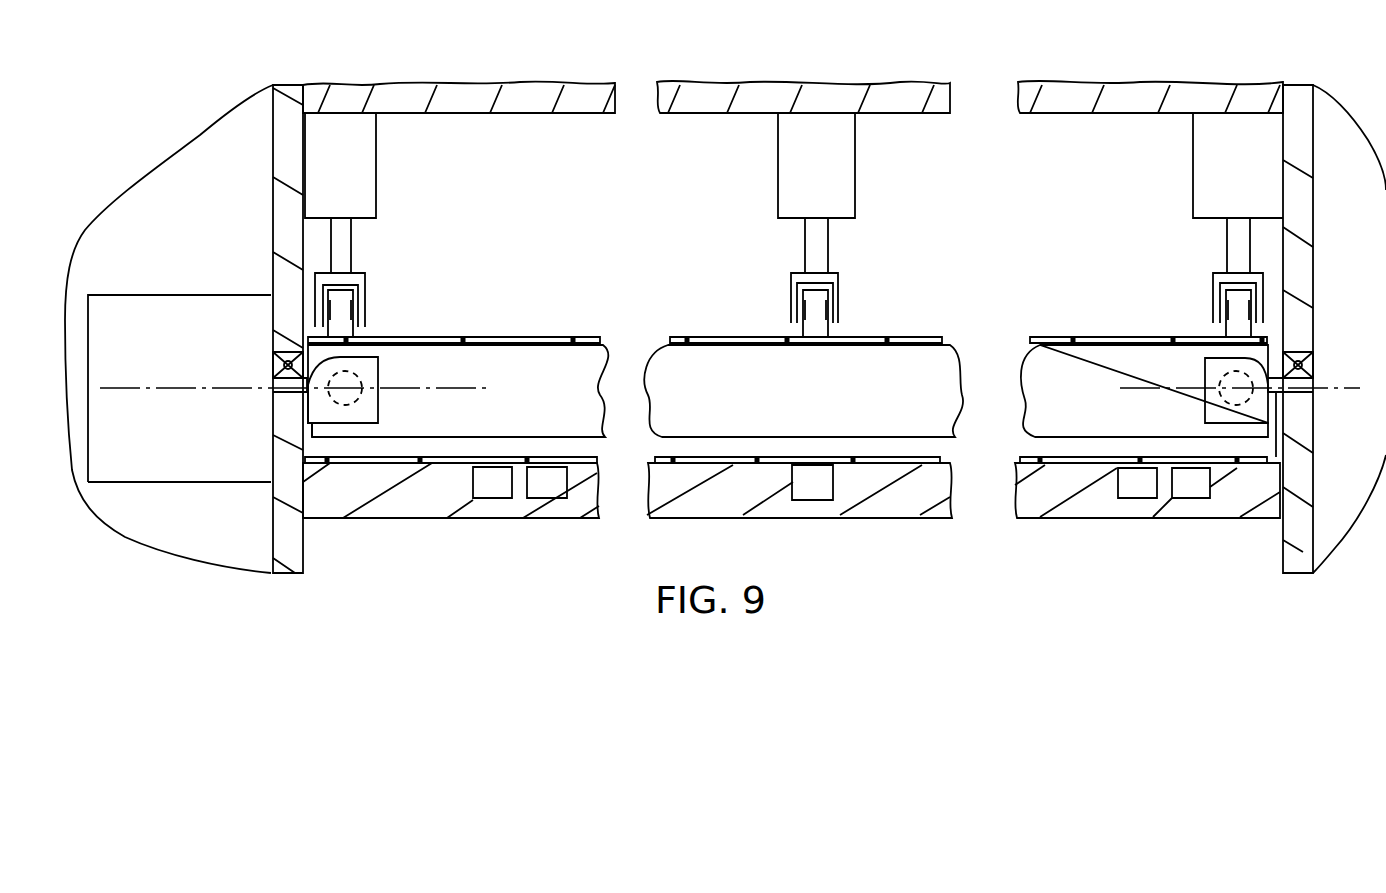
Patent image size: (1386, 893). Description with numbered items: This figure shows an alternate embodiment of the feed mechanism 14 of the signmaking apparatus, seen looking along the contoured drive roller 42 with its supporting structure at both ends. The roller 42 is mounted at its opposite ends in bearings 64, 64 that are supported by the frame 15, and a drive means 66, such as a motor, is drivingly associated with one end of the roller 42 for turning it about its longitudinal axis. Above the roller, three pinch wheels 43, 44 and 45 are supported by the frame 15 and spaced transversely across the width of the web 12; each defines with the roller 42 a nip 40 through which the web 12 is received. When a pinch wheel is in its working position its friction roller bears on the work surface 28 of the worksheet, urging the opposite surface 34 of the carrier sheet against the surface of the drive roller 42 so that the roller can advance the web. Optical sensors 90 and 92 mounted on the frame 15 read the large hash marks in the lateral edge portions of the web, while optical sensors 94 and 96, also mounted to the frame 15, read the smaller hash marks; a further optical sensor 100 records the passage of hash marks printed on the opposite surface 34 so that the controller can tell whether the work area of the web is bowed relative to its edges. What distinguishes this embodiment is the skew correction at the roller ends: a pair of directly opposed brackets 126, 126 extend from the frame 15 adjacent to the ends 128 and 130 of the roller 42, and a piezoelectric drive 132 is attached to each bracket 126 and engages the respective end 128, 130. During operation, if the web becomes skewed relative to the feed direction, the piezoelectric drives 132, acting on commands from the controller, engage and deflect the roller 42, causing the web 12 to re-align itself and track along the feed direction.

The web 12 is at (1051, 338).
The feed mechanism 14 is at (936, 535).
The frame 15 is at (514, 92).
The work surface 28 is at (1095, 338).
The opposite surface 34 is at (1098, 343).
The nip 40 is at (364, 336).
The contoured drive roller 42 is at (548, 362).
The pinch wheel 43 is at (386, 289).
The pinch wheel 44 is at (776, 284).
The pinch wheel 45 is at (1202, 289).
The bearing 64 is at (290, 352).
The drive means 66 is at (158, 312).
The optical sensor 90 is at (488, 487).
The optical sensor 92 is at (1190, 493).
The optical sensor 94 is at (546, 493).
The optical sensor 96 is at (1136, 493).
The optical sensor 100 is at (815, 490).
The bracket 126 is at (370, 403).
The end of roller 128 is at (1247, 432).
The end of roller 130 is at (338, 428).
The piezoelectric drive 132 is at (352, 373).